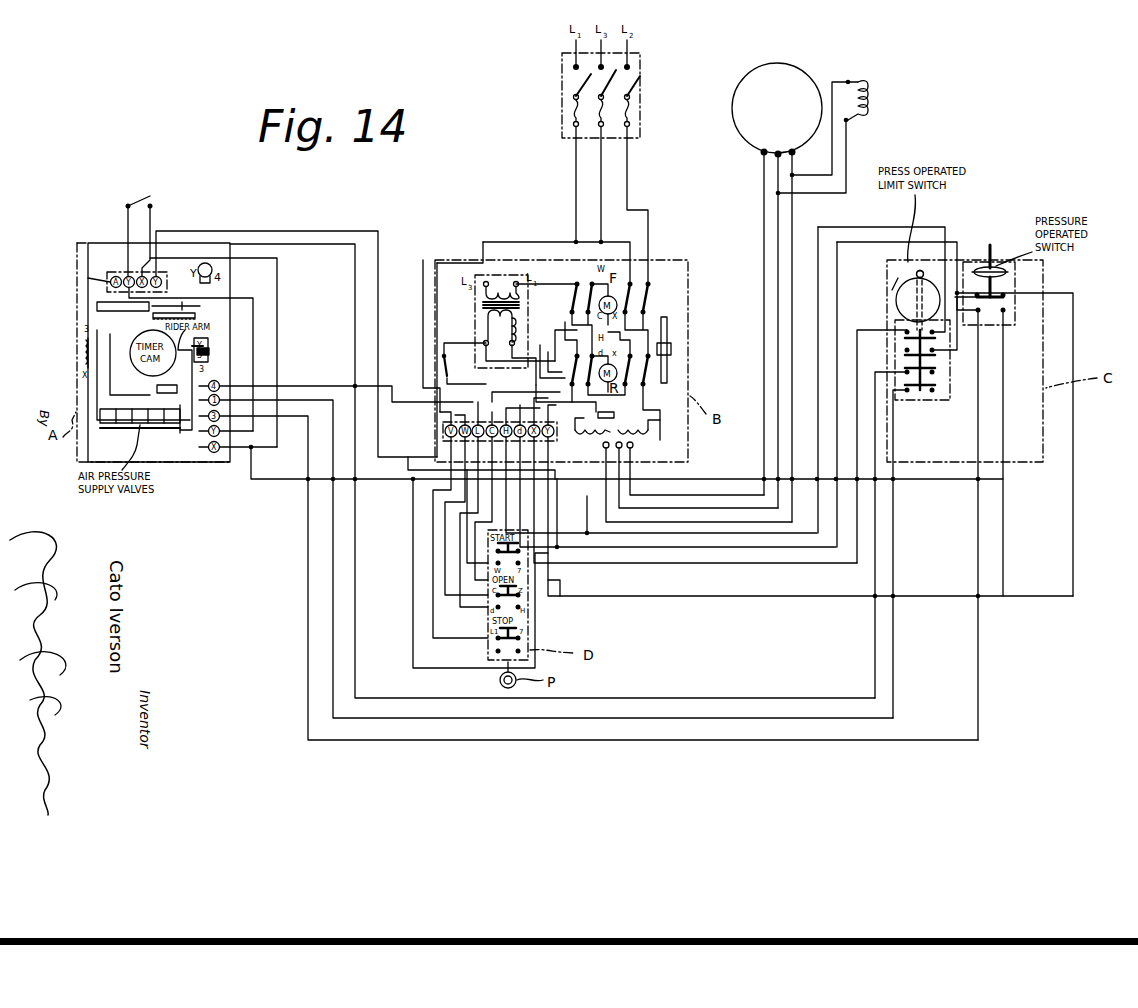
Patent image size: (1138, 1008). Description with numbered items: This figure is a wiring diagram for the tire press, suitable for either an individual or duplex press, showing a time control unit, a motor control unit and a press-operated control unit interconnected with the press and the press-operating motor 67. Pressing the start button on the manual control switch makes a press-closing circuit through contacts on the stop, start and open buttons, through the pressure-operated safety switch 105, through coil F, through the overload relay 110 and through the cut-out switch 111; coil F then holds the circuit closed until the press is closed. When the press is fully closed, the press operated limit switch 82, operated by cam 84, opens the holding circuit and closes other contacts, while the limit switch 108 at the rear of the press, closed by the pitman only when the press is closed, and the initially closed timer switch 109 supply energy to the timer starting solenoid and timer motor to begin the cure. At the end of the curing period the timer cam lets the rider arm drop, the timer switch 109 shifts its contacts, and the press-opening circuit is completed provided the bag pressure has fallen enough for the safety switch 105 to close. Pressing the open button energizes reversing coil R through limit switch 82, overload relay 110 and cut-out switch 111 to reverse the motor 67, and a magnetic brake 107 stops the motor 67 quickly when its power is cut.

The motor 67 is at (796, 76).
The magnetic brake 107 is at (866, 86).
The limit switch 108 is at (152, 198).
The timer switch 109 is at (157, 389).
The overload relay 110 is at (640, 437).
The cut-out switch 111 is at (440, 363).
The press operated limit switch 82 is at (902, 330).
The cam 84 is at (927, 290).
The pressure-operated safety switch 105 is at (1008, 276).